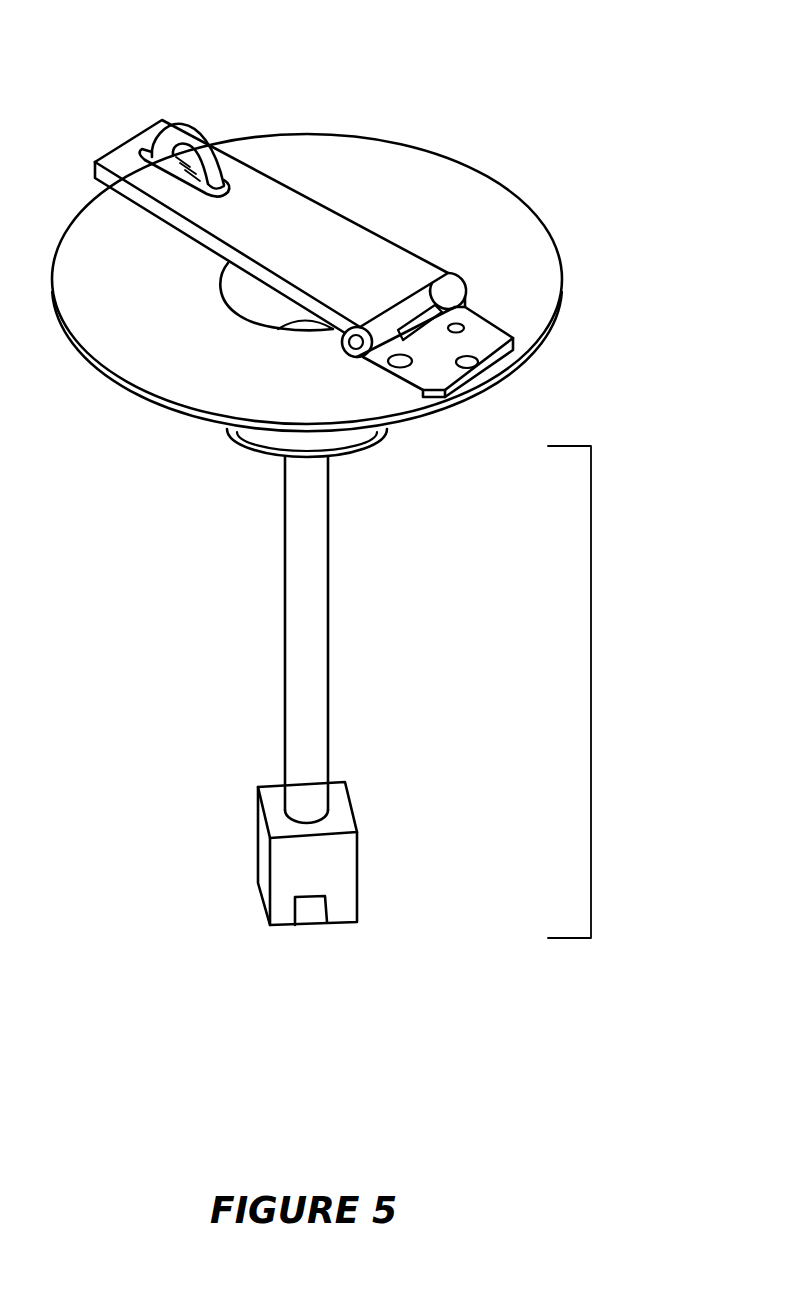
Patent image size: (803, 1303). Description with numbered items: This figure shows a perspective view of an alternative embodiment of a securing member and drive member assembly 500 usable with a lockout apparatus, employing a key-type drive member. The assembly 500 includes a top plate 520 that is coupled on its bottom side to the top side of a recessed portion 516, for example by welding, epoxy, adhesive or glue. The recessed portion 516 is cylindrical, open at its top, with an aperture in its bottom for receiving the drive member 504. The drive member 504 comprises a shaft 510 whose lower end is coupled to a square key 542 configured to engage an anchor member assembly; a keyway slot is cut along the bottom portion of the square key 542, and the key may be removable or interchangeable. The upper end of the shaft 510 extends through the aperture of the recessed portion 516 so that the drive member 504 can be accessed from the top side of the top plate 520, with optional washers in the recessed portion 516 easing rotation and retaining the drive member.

The securing member and drive member assembly 500 is at (381, 44).
The drive member 504 is at (591, 703).
The shaft 510 is at (330, 558).
The recessed portion 516 is at (240, 313).
The top plate 520 is at (317, 132).
The square key 542 is at (358, 868).